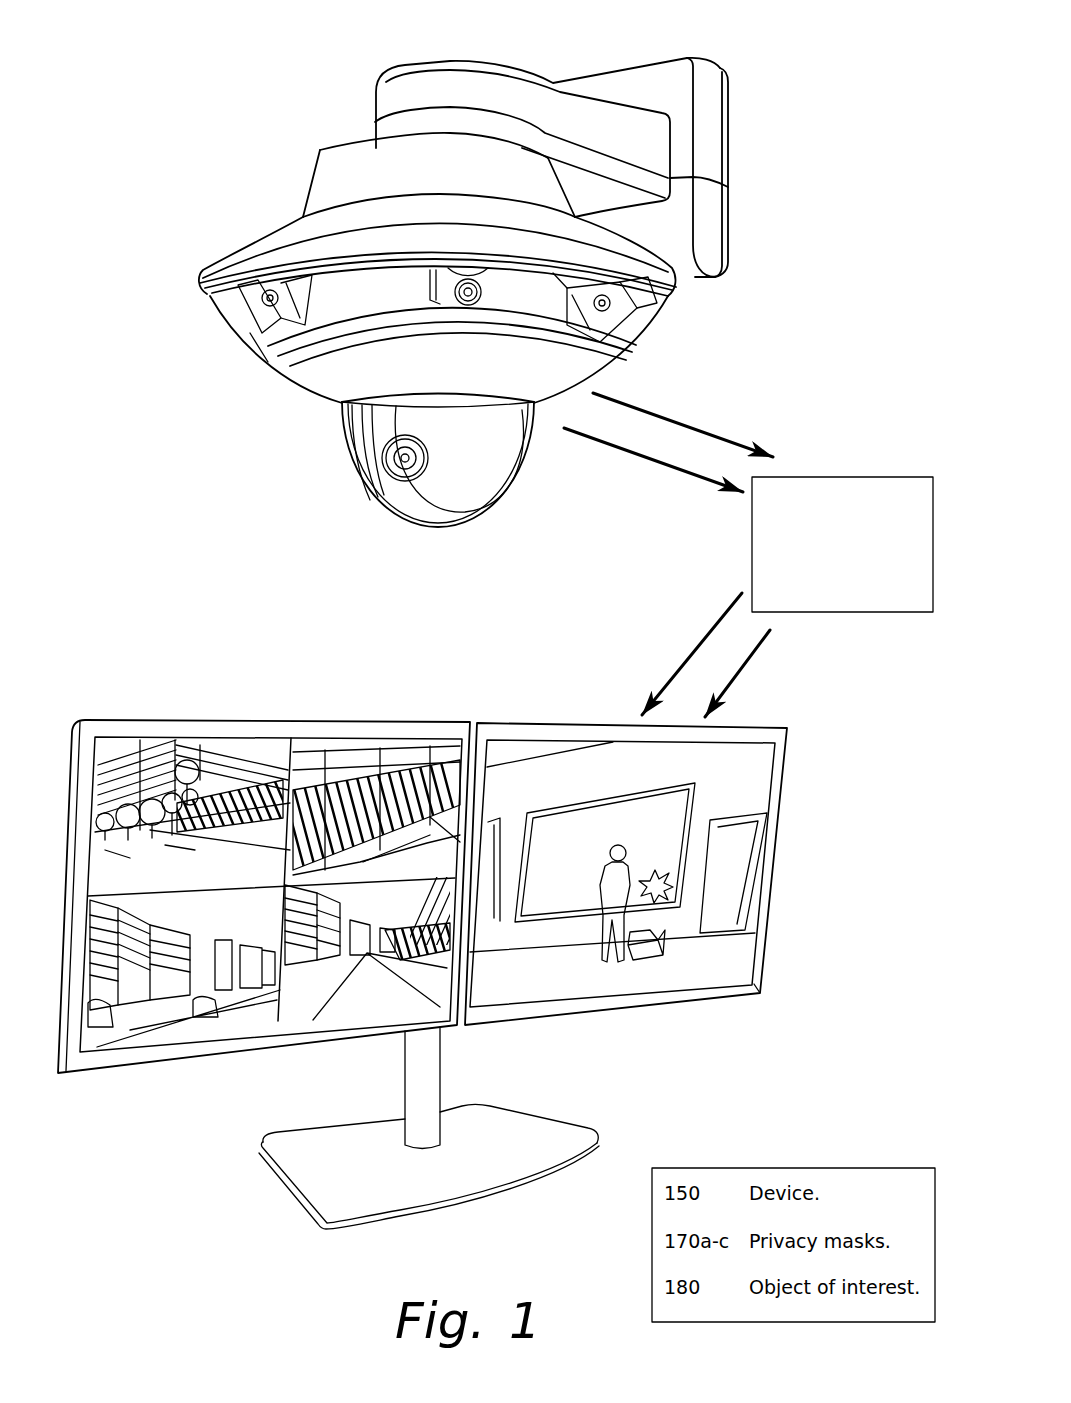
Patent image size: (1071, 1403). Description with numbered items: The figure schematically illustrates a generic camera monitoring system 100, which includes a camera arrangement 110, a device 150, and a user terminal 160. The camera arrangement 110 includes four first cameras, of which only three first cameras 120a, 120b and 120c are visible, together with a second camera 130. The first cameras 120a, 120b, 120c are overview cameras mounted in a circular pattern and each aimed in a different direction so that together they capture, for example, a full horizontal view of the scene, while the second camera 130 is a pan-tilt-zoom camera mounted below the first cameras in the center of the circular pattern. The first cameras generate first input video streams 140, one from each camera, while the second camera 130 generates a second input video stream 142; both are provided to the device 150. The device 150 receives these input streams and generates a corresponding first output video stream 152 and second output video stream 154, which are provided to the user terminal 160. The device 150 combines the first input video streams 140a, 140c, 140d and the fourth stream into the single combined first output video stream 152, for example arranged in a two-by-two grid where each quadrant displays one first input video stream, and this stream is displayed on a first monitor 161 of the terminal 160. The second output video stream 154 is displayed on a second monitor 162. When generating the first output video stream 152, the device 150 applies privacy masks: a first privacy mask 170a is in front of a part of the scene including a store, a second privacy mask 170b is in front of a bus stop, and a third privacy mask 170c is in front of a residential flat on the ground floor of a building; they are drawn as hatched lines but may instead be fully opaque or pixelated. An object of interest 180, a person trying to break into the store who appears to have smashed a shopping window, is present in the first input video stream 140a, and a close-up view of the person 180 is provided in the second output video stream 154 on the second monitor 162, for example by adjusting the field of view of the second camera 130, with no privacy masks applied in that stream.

The camera monitoring system 100 is at (101, 64).
The camera arrangement 110 is at (327, 178).
The first camera 120a is at (260, 322).
The first camera 120b is at (457, 305).
The first camera 120c is at (650, 315).
The second camera 130 is at (395, 495).
The first input video streams 140 is at (680, 421).
The first input video stream 140a is at (152, 745).
The first input video stream 140c is at (365, 753).
The first input video stream 140d is at (140, 1040).
The second input video stream 142 is at (650, 460).
The device 150 is at (866, 557).
The first output video stream 152 is at (692, 653).
The second output video stream 154 is at (743, 670).
The user terminal 160 is at (507, 1162).
The first monitor 161 is at (90, 725).
The second monitor 162 is at (775, 802).
The first privacy mask 170a is at (223, 797).
The second privacy mask 170b is at (440, 758).
The third privacy mask 170c is at (425, 957).
The object of interest 180 is at (608, 893).